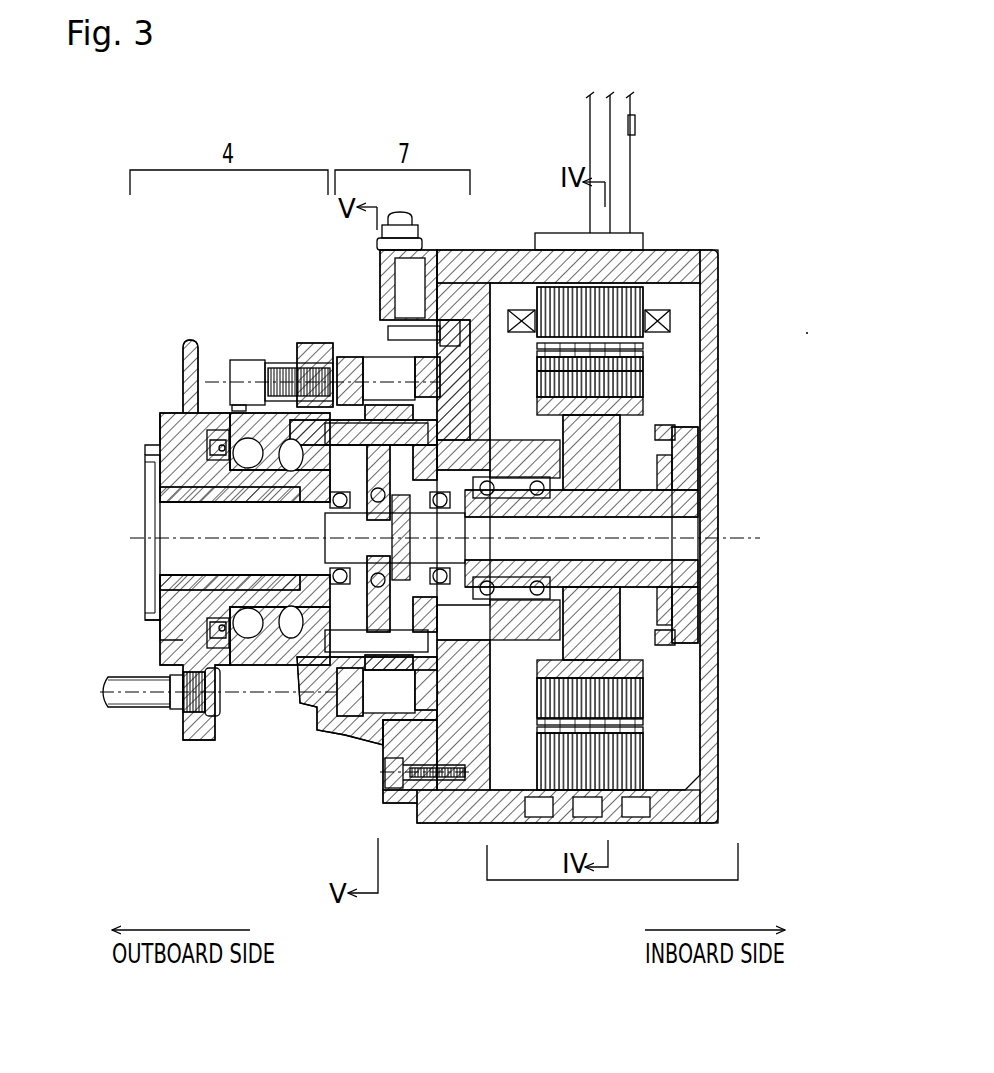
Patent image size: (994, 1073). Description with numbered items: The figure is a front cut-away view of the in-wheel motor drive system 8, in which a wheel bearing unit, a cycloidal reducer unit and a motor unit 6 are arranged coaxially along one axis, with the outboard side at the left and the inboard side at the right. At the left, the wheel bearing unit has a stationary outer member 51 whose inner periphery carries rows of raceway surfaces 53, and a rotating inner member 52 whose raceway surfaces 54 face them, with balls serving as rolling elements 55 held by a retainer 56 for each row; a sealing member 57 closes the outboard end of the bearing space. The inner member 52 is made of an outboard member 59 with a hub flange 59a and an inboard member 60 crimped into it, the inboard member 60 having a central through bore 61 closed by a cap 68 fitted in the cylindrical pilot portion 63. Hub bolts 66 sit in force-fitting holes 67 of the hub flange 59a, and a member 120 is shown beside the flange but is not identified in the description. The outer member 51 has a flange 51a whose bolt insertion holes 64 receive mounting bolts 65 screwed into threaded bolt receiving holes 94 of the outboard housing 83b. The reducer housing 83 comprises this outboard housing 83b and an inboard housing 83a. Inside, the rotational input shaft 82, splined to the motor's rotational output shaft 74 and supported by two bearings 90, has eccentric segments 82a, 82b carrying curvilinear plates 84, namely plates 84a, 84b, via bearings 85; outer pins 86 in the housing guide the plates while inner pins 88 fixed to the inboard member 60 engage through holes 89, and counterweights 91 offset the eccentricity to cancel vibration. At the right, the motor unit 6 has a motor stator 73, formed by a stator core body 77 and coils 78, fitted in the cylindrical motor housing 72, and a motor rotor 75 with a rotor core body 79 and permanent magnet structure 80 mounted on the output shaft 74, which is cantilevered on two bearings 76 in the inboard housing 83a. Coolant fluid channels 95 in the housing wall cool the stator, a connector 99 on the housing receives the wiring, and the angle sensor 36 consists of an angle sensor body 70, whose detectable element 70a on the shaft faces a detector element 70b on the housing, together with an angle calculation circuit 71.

The in-wheel motor drive system 8 is at (493, 115).
The motor unit 6 is at (612, 876).
The angle sensor 36 is at (806, 333).
The outer member 51 is at (225, 425).
The flange 51a is at (277, 362).
The inner member 52 is at (105, 463).
The raceway surfaces 53 is at (255, 640).
The raceway surfaces 54 is at (290, 610).
The rolling elements 55 is at (290, 490).
The retainer 56 is at (212, 640).
The sealing member 57 is at (175, 625).
The outboard member 59 is at (155, 473).
The hub flange 59a is at (188, 340).
The inboard member 60 is at (230, 490).
The through bore 61 is at (150, 548).
The cylindrical pilot portion 63 is at (148, 455).
The bolt insertion holes 64 is at (237, 405).
The mounting bolts 65 is at (250, 360).
The hub bolts 66 is at (135, 705).
The force-fitting holes 67 is at (180, 715).
The cap 68 is at (148, 575).
The angle sensor body 70 is at (772, 362).
The detectable element 70a is at (672, 470).
The detector element 70b is at (660, 425).
The angle calculation circuit 71 is at (637, 130).
The motor housing 72 is at (513, 250).
The motor stator 73 is at (727, 174).
The rotational output shaft 74 is at (672, 590).
The motor rotor 75 is at (527, 400).
The bearings 76 is at (495, 600).
The stator core body 77 is at (648, 295).
The coils 78 is at (678, 302).
The rotor core body 79 is at (548, 375).
The permanent magnet structure 80 is at (548, 352).
The rotational input shaft 82 is at (585, 570).
The eccentric segment 82a is at (405, 522).
The eccentric segment 82b is at (385, 557).
The casing partition 83 is at (404, 326).
The inboard housing 83a is at (455, 330).
The outboard housing 83b is at (357, 353).
The casing cover 84 is at (381, 752).
The curvilinear plate 84a is at (418, 700).
The curvilinear plate 84b is at (380, 700).
The bearings 85 is at (370, 620).
The outer pins 86 is at (388, 320).
The inner pins 88 is at (340, 362).
The through holes 89 is at (385, 345).
The bearings 90 is at (330, 620).
The counterweights 91 is at (355, 470).
The bolt receiving holes 94 is at (297, 367).
The coolant fluid channel 95 is at (545, 818).
The connector 99 is at (562, 235).
The brake rotor attachment 120 is at (190, 340).